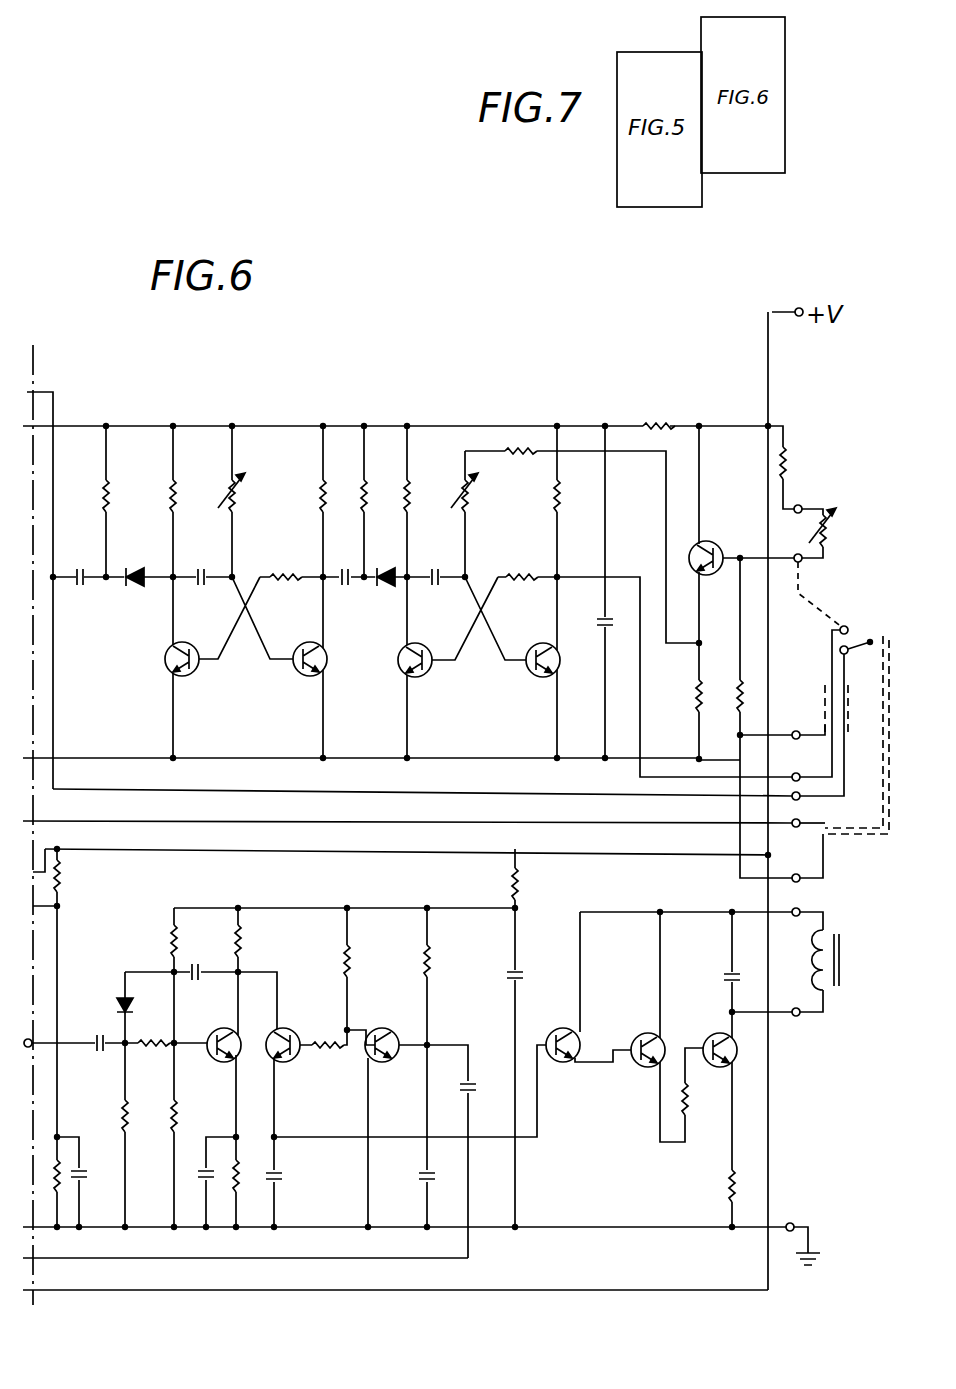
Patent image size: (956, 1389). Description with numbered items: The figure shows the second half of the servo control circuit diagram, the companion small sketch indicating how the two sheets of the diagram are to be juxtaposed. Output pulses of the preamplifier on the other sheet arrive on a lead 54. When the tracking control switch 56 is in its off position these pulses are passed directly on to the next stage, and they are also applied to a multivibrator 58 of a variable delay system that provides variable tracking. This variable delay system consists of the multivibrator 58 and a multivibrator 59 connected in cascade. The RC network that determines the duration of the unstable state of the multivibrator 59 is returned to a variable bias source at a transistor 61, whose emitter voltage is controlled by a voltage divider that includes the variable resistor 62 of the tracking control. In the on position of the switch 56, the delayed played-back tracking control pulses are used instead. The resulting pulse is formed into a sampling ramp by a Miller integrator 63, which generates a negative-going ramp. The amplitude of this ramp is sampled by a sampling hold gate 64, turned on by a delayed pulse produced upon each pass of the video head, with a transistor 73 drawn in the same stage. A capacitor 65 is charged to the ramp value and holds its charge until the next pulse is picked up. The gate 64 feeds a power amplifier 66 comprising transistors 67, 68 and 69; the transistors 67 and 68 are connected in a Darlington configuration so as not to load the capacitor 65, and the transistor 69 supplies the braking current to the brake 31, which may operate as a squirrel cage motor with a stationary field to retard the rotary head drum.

The lead 54 is at (57, 400).
The multivibrator 58 is at (255, 716).
The multivibrator 59 is at (496, 716).
The transistor 61 is at (715, 545).
The variable resistor 62 is at (836, 516).
The tracking control switch 56 is at (862, 639).
The Miller integrator 63 is at (220, 898).
The sampling hold gate 64 is at (330, 1117).
The transistor 73 is at (412, 1117).
The capacitor 65 is at (276, 1181).
The power amplifier 66 is at (615, 1120).
The transistor 67 is at (556, 1031).
The transistor 68 is at (632, 1031).
The transistor 69 is at (709, 1031).
The braking device 31 is at (844, 954).